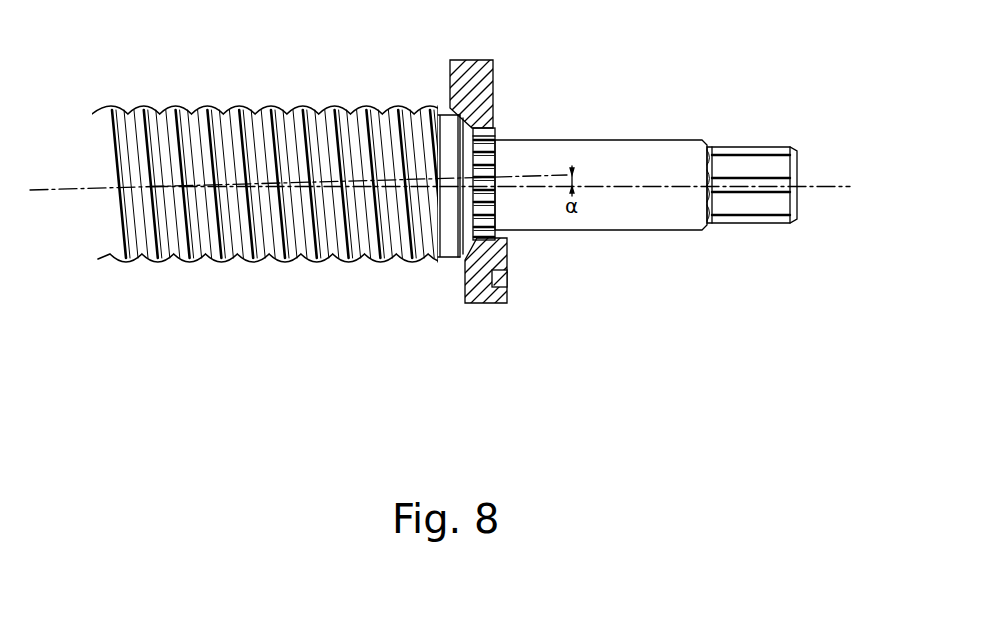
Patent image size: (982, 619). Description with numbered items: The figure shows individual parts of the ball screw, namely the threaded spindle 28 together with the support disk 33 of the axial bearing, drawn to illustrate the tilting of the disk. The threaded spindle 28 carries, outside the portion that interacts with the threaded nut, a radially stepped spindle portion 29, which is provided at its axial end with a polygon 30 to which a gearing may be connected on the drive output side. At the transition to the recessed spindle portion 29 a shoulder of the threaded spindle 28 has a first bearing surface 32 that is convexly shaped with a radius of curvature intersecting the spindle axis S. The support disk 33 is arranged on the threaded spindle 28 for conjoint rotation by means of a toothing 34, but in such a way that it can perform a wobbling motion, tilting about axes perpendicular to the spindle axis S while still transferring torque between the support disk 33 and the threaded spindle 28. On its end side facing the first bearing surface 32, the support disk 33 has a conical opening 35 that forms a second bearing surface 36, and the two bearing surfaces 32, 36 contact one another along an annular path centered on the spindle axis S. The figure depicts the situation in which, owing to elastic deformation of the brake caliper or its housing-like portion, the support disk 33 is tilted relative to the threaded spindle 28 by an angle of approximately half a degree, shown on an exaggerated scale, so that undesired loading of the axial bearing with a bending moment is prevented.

The threaded spindle 28 is at (167, 140).
The radially stepped spindle portion 29 is at (545, 158).
The polygon 30 is at (743, 168).
The bearing surface 32 is at (470, 258).
The support disk 33 is at (473, 68).
The toothing 34 is at (497, 128).
The conical opening 35 is at (462, 120).
The second bearing surface 36 is at (462, 120).
The spindle axis S is at (633, 184).